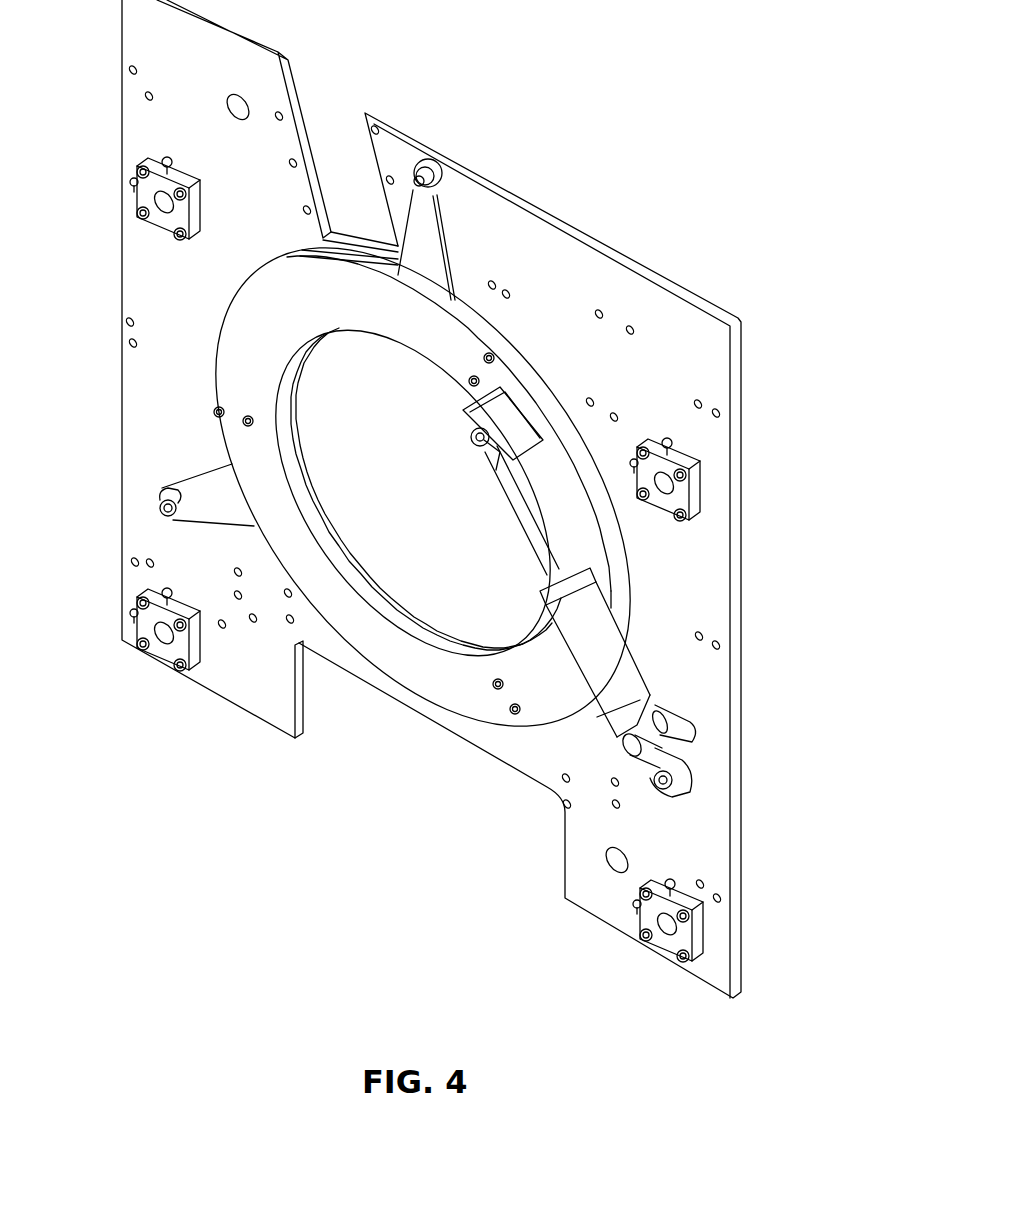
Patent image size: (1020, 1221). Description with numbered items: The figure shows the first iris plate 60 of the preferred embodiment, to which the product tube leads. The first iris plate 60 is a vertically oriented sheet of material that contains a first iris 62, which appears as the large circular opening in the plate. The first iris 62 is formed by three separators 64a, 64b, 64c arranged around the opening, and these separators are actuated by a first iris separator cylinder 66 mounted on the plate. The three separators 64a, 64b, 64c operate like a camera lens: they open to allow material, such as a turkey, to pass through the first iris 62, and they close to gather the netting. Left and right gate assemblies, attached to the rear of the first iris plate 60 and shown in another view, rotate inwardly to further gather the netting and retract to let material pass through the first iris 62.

The first iris plate 60 is at (557, 233).
The first iris 62 is at (367, 303).
The separator 64a is at (428, 228).
The separator 64b is at (210, 490).
The separator 64c is at (597, 717).
The first iris separator cylinder 66 is at (620, 667).